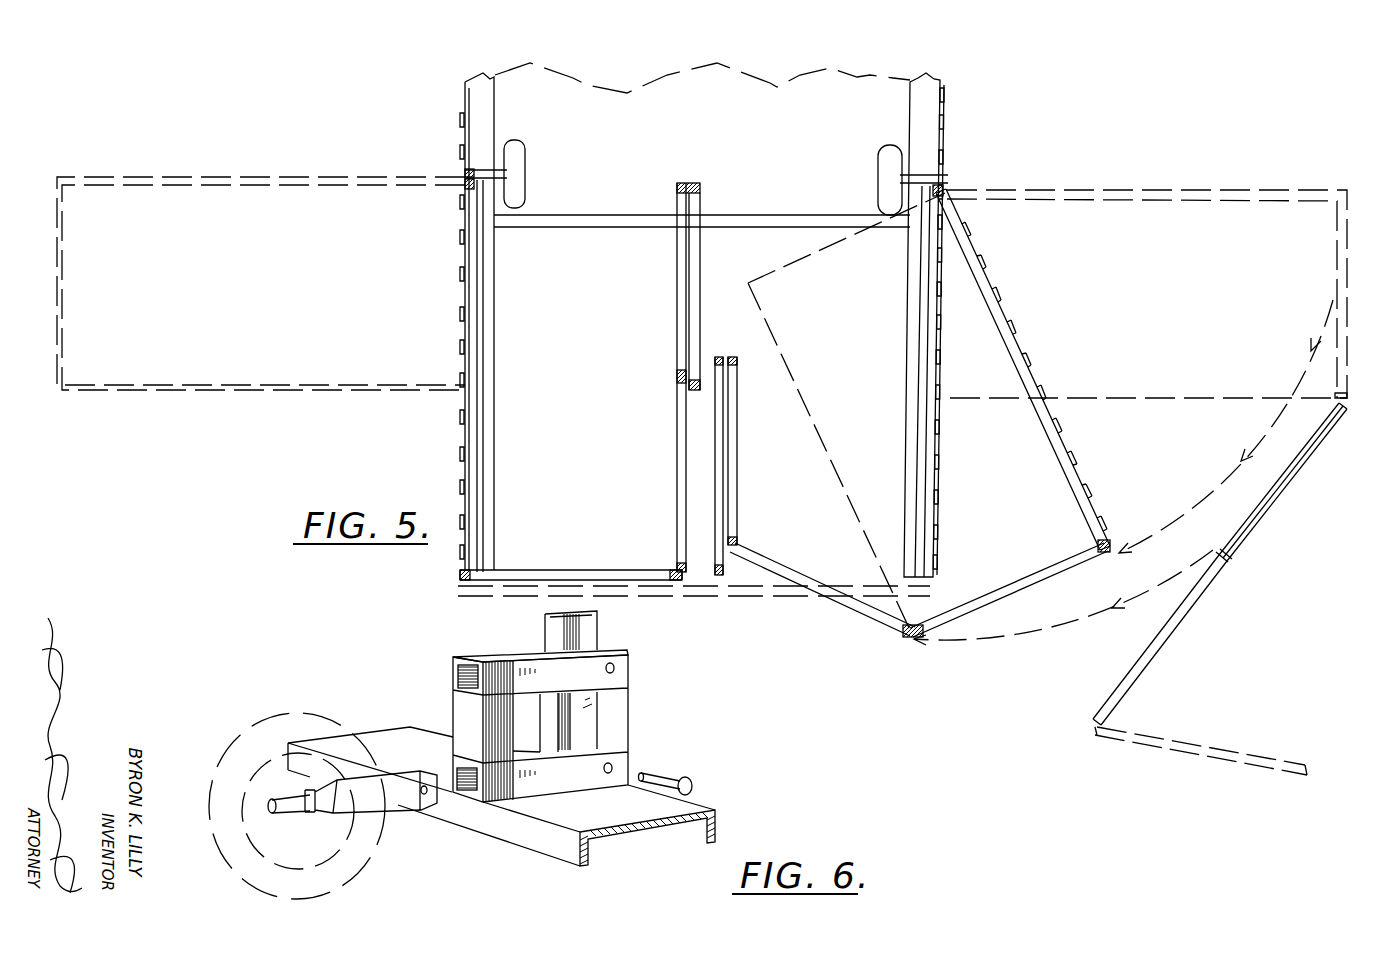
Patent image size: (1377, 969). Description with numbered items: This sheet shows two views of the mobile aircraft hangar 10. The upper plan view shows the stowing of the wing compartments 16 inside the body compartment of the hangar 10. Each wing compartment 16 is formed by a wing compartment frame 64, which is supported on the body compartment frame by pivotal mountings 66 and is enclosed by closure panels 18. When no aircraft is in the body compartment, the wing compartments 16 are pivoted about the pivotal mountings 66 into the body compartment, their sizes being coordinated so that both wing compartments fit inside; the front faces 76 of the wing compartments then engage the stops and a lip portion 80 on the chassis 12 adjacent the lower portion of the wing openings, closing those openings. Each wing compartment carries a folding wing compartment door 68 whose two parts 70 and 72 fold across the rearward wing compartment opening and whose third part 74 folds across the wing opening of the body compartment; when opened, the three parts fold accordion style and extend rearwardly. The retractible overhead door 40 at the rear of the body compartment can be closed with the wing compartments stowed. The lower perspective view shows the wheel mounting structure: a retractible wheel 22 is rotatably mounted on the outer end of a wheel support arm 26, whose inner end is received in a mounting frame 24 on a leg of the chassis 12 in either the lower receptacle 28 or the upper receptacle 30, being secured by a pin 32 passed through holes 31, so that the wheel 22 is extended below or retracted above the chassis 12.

In FIG. 5, the mobile aircraft hangar 10 is at (975, 169).
In FIG. 5, the chassis 12 is at (510, 295).
In FIG. 6, the chassis 12 is at (718, 830).
In FIG. 5, the wing compartments 16 is at (236, 167).
In FIG. 5, the closure panels 18 is at (463, 90).
In FIG. 5, the retractible wheels 22 is at (515, 185).
In FIG. 6, the retractible wheels 22 is at (308, 715).
In FIG. 6, the mounting frames 24 is at (438, 699).
In FIG. 6, the wheel support arms 26 is at (397, 800).
In FIG. 6, the lower receptacle 28 is at (470, 793).
In FIG. 6, the upper receptacle 30 is at (458, 668).
In FIG. 6, the holes 31 is at (614, 768).
In FIG. 6, the pins 32 is at (662, 780).
In FIG. 5, the retractible overhead door 40 is at (713, 598).
In FIG. 5, the wing compartment frame 64 is at (62, 219).
In FIG. 5, the pivotal mountings 66 is at (465, 172).
In FIG. 5, the folding wing compartment doors 68 is at (231, 402).
In FIG. 5, the first door part 70 is at (165, 394).
In FIG. 5, the second door part 72 is at (378, 393).
In FIG. 5, the third door part 74 is at (702, 240).
In FIG. 5, the front faces 76 is at (288, 176).
In FIG. 5, the lip portion 80 is at (470, 372).